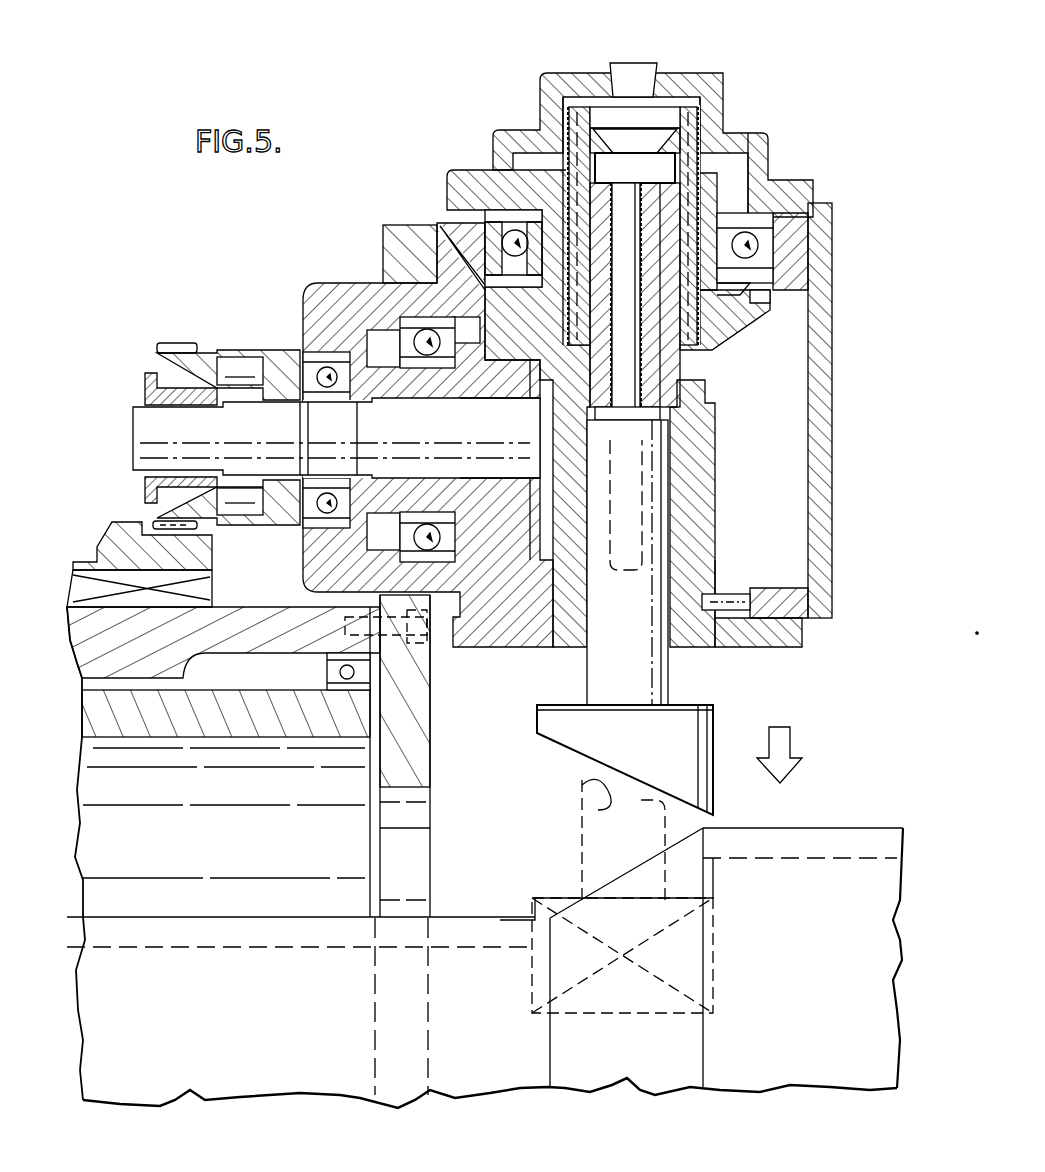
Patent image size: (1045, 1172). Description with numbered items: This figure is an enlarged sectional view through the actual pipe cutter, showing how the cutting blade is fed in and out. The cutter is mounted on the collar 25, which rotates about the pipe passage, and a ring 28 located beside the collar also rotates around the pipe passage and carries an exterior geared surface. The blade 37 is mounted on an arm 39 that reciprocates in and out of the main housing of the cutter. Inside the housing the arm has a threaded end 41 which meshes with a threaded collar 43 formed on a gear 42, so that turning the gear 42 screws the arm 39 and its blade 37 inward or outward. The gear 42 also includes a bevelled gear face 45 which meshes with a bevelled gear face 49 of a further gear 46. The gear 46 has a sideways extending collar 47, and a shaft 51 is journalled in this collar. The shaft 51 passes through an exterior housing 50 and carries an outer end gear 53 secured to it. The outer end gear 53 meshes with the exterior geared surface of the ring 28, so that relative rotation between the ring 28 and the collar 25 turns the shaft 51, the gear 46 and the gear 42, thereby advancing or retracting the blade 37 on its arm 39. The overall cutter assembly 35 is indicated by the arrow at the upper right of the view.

The collar 25 is at (393, 240).
The ring 28 is at (195, 552).
The spindle housing 35 is at (787, 127).
The blade 37 is at (717, 728).
The arm 39 is at (648, 687).
The threaded end 41 is at (683, 207).
The gear 42 is at (742, 292).
The threaded collar 43 is at (552, 192).
The bevelled gear face 45 is at (470, 240).
The gear 46 is at (517, 365).
The sideways extending collar 47 is at (352, 385).
The bevelled gear face 49 is at (495, 320).
The exterior housing 50 is at (270, 350).
The shaft 51 is at (165, 435).
The outer end gear 53 is at (172, 345).